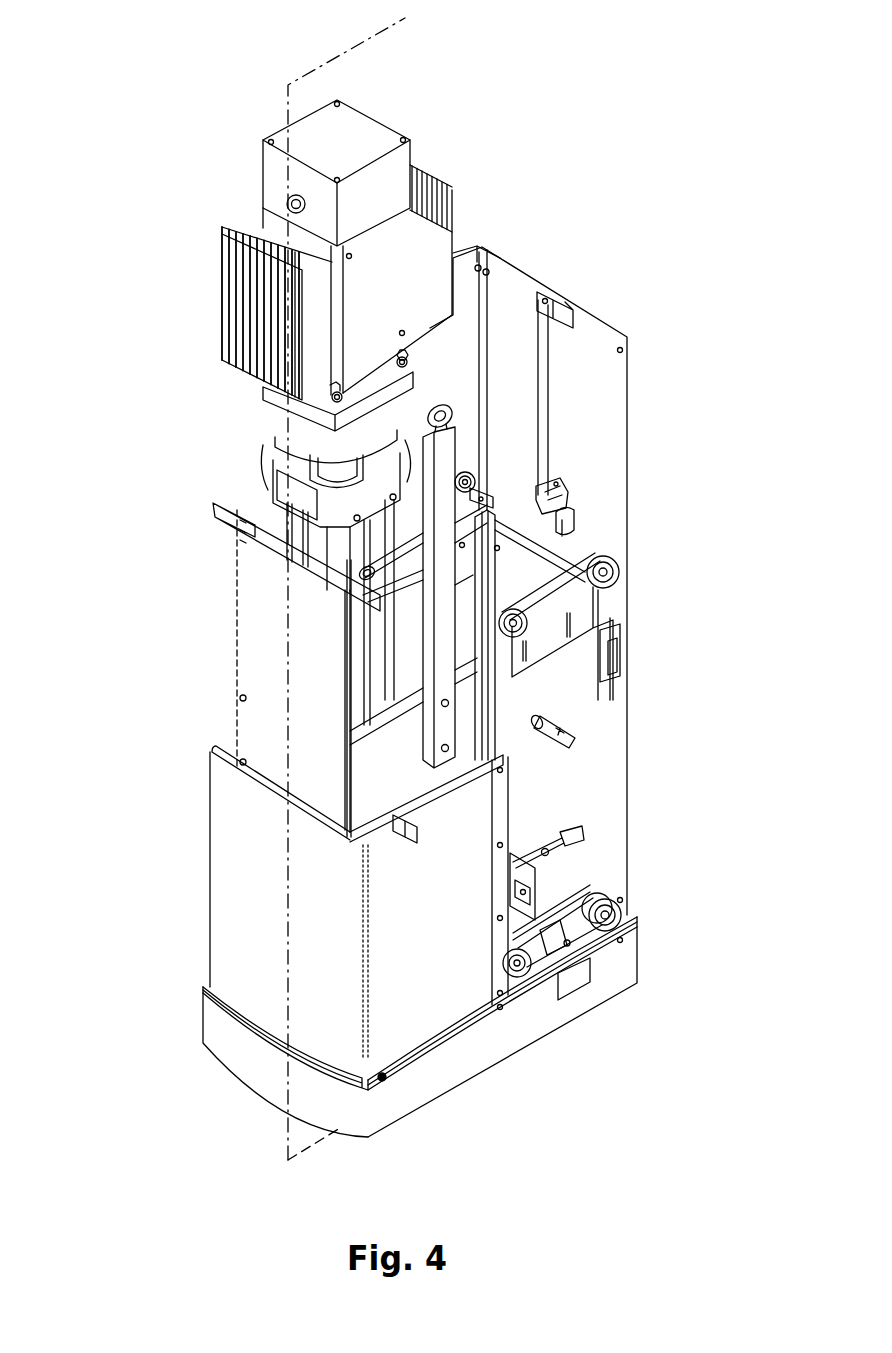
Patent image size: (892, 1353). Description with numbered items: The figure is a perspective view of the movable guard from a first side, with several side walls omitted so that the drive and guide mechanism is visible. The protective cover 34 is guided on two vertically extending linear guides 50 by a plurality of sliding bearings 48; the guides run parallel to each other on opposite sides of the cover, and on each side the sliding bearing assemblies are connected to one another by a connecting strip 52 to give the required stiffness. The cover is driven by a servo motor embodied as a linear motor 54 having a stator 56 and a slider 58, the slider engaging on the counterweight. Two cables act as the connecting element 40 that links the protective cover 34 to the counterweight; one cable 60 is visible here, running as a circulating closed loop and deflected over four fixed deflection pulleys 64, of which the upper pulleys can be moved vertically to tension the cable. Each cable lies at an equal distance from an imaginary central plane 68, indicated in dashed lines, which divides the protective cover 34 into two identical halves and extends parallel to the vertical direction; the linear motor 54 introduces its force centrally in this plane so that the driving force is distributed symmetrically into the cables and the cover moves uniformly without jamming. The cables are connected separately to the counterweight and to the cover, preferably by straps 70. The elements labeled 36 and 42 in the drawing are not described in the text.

The protective cover 34 is at (228, 922).
The guide element 36 is at (631, 488).
The connecting element 40 is at (578, 581).
The deflection roller 42 is at (612, 766).
The sliding bearings 48 is at (497, 773).
The linear guides 50 is at (462, 543).
The connecting strip 52 is at (503, 825).
The linear motor 54 is at (562, 490).
The stator 56 is at (580, 521).
The slider 58 is at (545, 407).
The cable 60 is at (628, 725).
The deflection pulleys 64 is at (612, 570).
The central plane 68 is at (286, 868).
The straps 70 is at (612, 653).